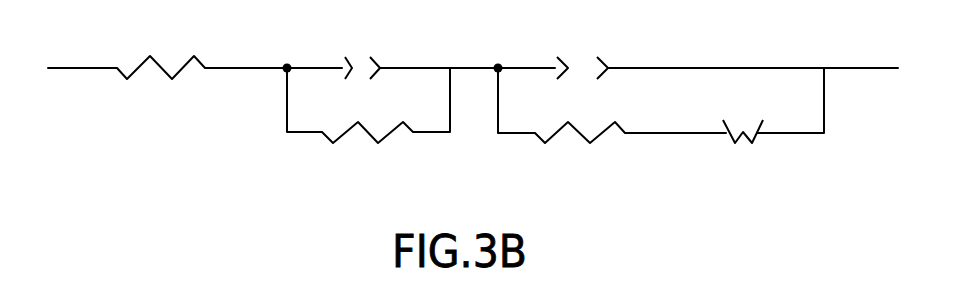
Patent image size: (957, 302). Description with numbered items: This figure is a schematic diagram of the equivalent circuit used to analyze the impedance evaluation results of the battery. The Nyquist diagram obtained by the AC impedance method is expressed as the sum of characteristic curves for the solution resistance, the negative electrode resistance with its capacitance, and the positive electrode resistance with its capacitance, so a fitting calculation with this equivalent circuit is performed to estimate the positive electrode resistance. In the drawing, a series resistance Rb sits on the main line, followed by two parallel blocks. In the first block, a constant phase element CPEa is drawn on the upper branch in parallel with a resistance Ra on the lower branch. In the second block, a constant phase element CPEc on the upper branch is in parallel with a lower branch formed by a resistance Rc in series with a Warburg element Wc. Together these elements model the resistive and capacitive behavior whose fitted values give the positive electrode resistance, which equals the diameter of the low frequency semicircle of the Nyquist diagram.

The bulk resistance Rb is at (161, 50).
The constant phase element a CPEa is at (357, 50).
The resistance a Ra is at (367, 116).
The constant phase element c CPEc is at (572, 50).
The resistance c Rc is at (580, 116).
The Warburg element c Wc is at (748, 126).